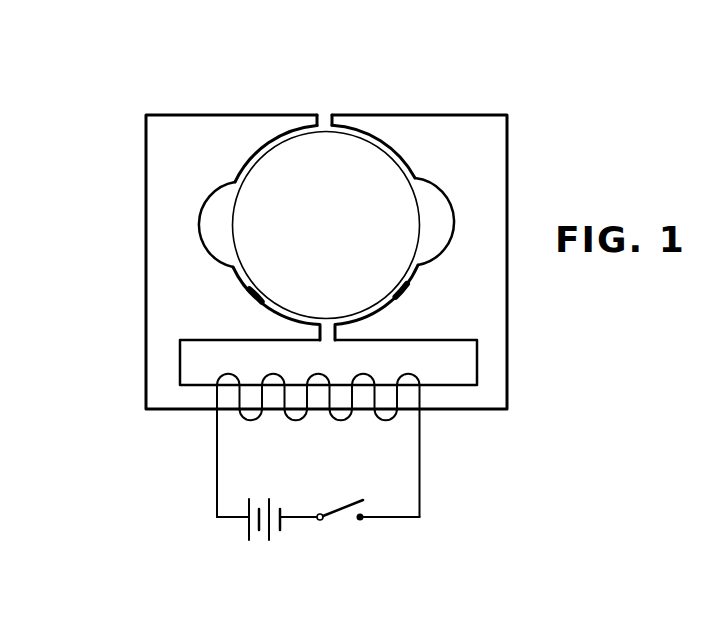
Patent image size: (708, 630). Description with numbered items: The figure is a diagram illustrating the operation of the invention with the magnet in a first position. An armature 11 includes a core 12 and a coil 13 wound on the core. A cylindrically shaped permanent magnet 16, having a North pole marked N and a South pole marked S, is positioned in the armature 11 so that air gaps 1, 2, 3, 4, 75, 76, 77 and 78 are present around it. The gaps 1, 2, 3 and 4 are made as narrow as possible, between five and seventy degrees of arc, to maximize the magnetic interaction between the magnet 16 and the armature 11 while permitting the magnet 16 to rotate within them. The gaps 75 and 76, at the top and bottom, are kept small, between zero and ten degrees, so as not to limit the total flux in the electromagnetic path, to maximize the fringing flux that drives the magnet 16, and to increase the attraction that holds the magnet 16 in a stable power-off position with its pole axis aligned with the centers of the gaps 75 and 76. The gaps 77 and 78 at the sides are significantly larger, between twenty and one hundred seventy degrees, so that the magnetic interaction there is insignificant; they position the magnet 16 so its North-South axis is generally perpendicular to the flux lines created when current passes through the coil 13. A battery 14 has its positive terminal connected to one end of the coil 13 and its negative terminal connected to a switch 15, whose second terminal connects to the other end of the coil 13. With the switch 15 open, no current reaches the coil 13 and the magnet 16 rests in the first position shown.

The air gap 1 is at (268, 143).
The air gap 2 is at (410, 160).
The air gap 3 is at (400, 290).
The air gap 4 is at (248, 295).
The armature 11 is at (261, 320).
The core 12 is at (160, 224).
The coil 13 is at (382, 418).
The battery 14 is at (249, 528).
The switch 15 is at (349, 507).
The permanent magnet 16 is at (350, 187).
The air gap 75 is at (325, 118).
The air gap 76 is at (327, 336).
The air gap 77 is at (215, 231).
The air gap 78 is at (437, 240).